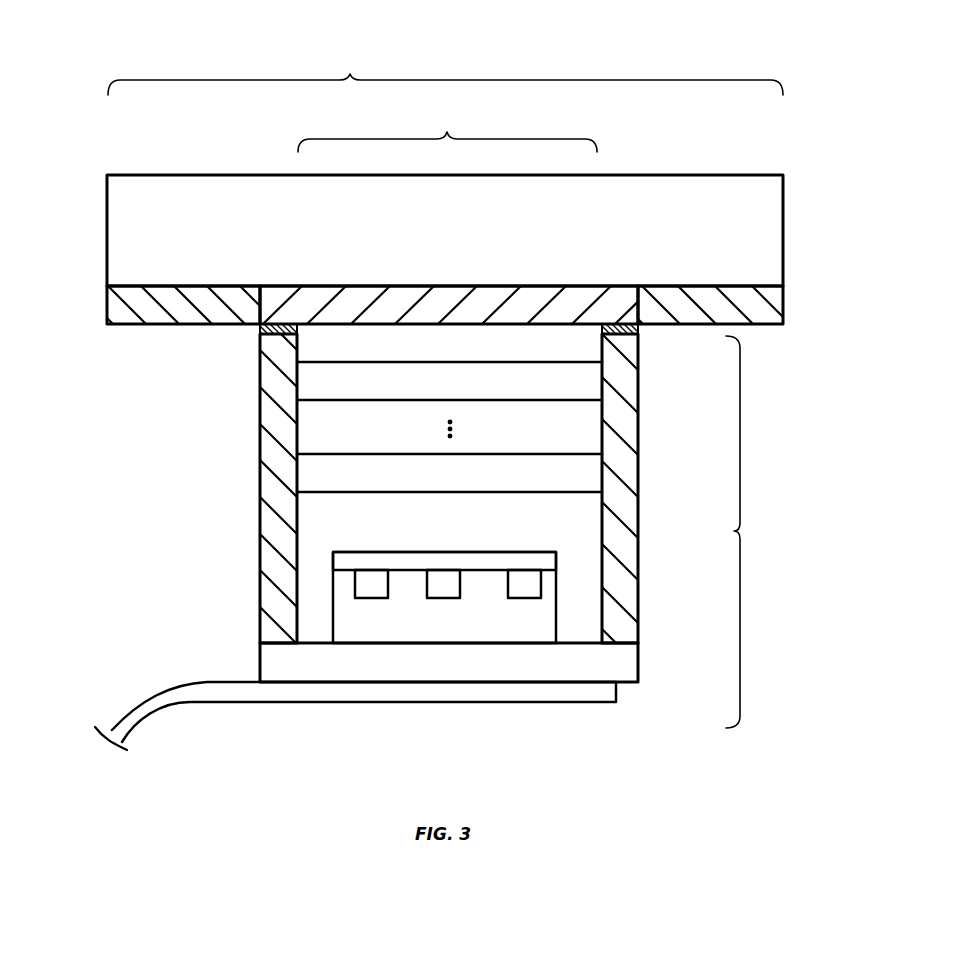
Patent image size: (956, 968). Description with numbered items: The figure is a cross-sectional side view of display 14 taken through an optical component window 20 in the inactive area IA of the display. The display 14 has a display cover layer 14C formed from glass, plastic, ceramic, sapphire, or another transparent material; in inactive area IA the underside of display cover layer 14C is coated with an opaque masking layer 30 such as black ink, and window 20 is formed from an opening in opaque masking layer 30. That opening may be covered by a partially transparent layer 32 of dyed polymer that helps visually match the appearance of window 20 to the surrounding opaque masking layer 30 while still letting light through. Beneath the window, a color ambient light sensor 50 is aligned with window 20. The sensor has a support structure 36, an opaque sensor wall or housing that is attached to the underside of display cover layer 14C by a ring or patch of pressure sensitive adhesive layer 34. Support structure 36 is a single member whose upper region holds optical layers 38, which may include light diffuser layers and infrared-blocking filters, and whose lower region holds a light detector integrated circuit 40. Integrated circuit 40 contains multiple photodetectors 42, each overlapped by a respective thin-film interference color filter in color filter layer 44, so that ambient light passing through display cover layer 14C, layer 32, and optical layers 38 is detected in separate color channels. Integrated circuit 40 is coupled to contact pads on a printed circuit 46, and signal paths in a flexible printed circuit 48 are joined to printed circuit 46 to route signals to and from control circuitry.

The display 14 is at (698, 50).
The display cover layer 14C is at (711, 187).
The inactive area IA is at (445, 73).
The optical component window 20 is at (447, 132).
The opaque masking layer 30 is at (120, 301).
The layer 32 is at (520, 288).
The pressure sensitive adhesive layer 34 is at (258, 331).
The support structure 36 is at (262, 548).
The optical layers 38 is at (550, 383).
The light detector integrated circuit 40 is at (350, 632).
The photodetectors 42 is at (453, 600).
The color filter layer 44 is at (498, 560).
The printed circuit 46 is at (625, 663).
The flexible printed circuit 48 is at (620, 693).
The color ambient light sensor 50 is at (752, 532).